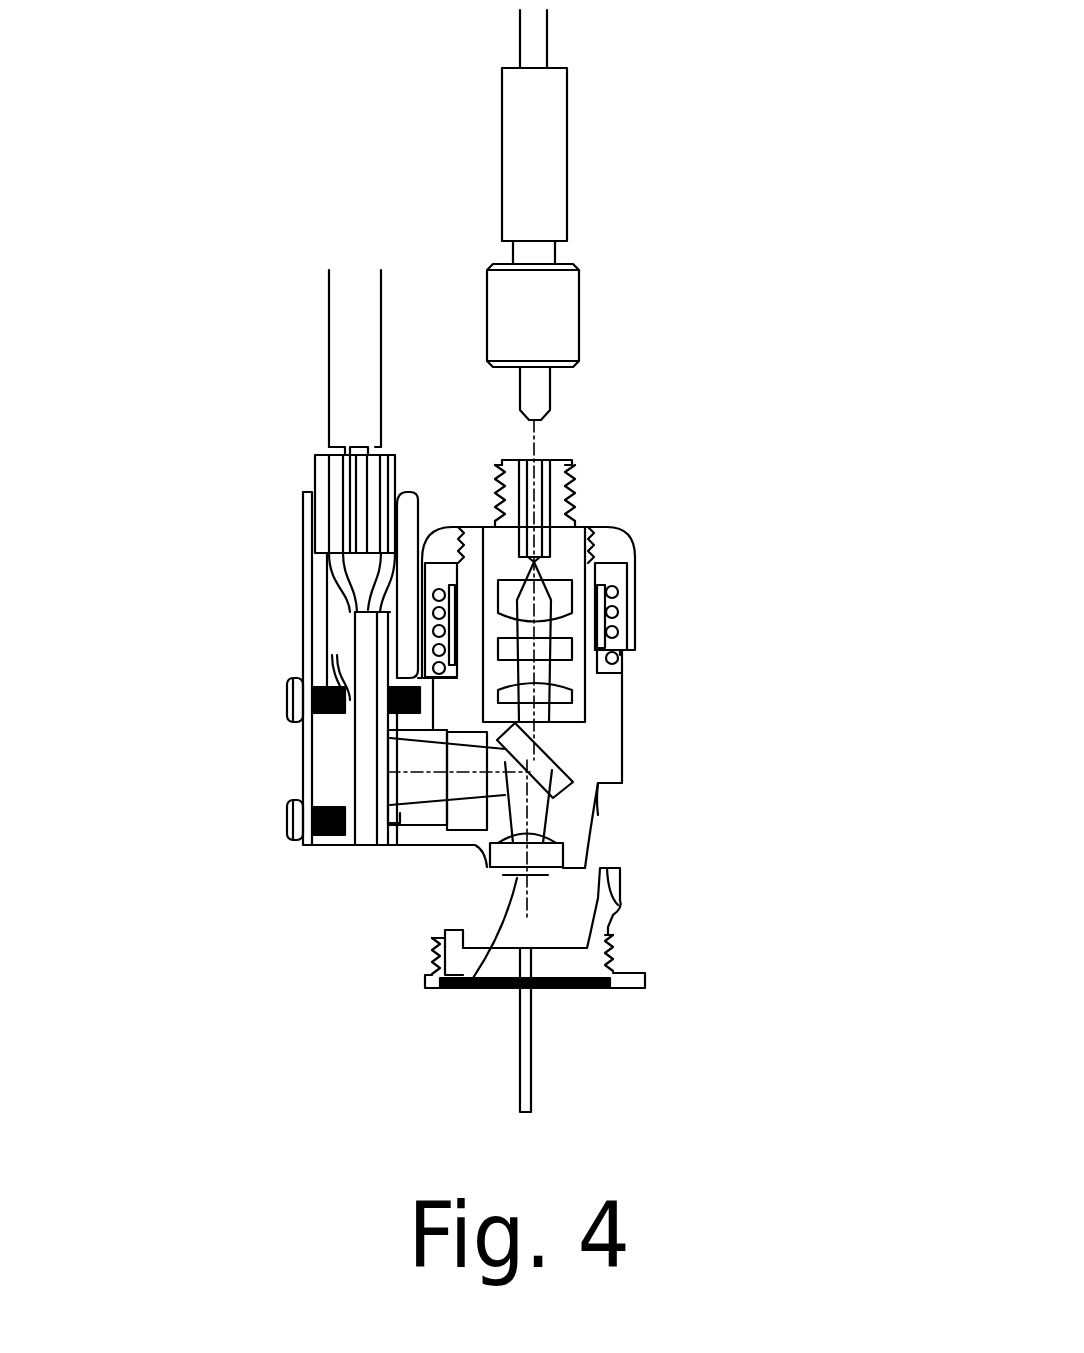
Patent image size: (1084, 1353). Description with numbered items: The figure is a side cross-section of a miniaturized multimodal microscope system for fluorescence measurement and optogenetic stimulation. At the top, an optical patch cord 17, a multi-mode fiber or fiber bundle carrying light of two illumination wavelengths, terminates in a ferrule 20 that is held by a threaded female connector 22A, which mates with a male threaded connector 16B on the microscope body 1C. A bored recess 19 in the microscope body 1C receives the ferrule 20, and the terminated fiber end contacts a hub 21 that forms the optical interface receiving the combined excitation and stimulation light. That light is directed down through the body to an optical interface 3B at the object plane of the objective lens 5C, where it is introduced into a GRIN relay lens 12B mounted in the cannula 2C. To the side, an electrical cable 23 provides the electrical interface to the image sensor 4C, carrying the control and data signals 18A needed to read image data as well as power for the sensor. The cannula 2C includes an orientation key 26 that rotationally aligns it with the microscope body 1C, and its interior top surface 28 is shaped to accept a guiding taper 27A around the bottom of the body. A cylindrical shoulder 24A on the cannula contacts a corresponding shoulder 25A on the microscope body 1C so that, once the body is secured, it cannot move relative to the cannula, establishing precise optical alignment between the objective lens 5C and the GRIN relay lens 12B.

The optical patch cord 17 is at (521, 22).
The threaded female connector 22A is at (494, 299).
The ferrule 20 is at (550, 399).
The male threaded connector 16B is at (580, 473).
The bored recess 19 is at (518, 498).
The hub 21 is at (543, 553).
The microscope body 1C is at (607, 727).
The shoulder 25A is at (602, 793).
The guiding taper 27A is at (602, 820).
The image sensor 4C is at (370, 778).
The electrical cable 23 is at (343, 357).
The control and data signals 18A is at (338, 638).
The objective lens 5C is at (480, 852).
The cannula 2C is at (553, 968).
The orientation key 26 is at (460, 930).
The optical interface 3B is at (463, 988).
The interior top surface 28 is at (620, 902).
The cylindrical shoulder 24A is at (608, 932).
The GRIN relay lens 12B is at (535, 1072).